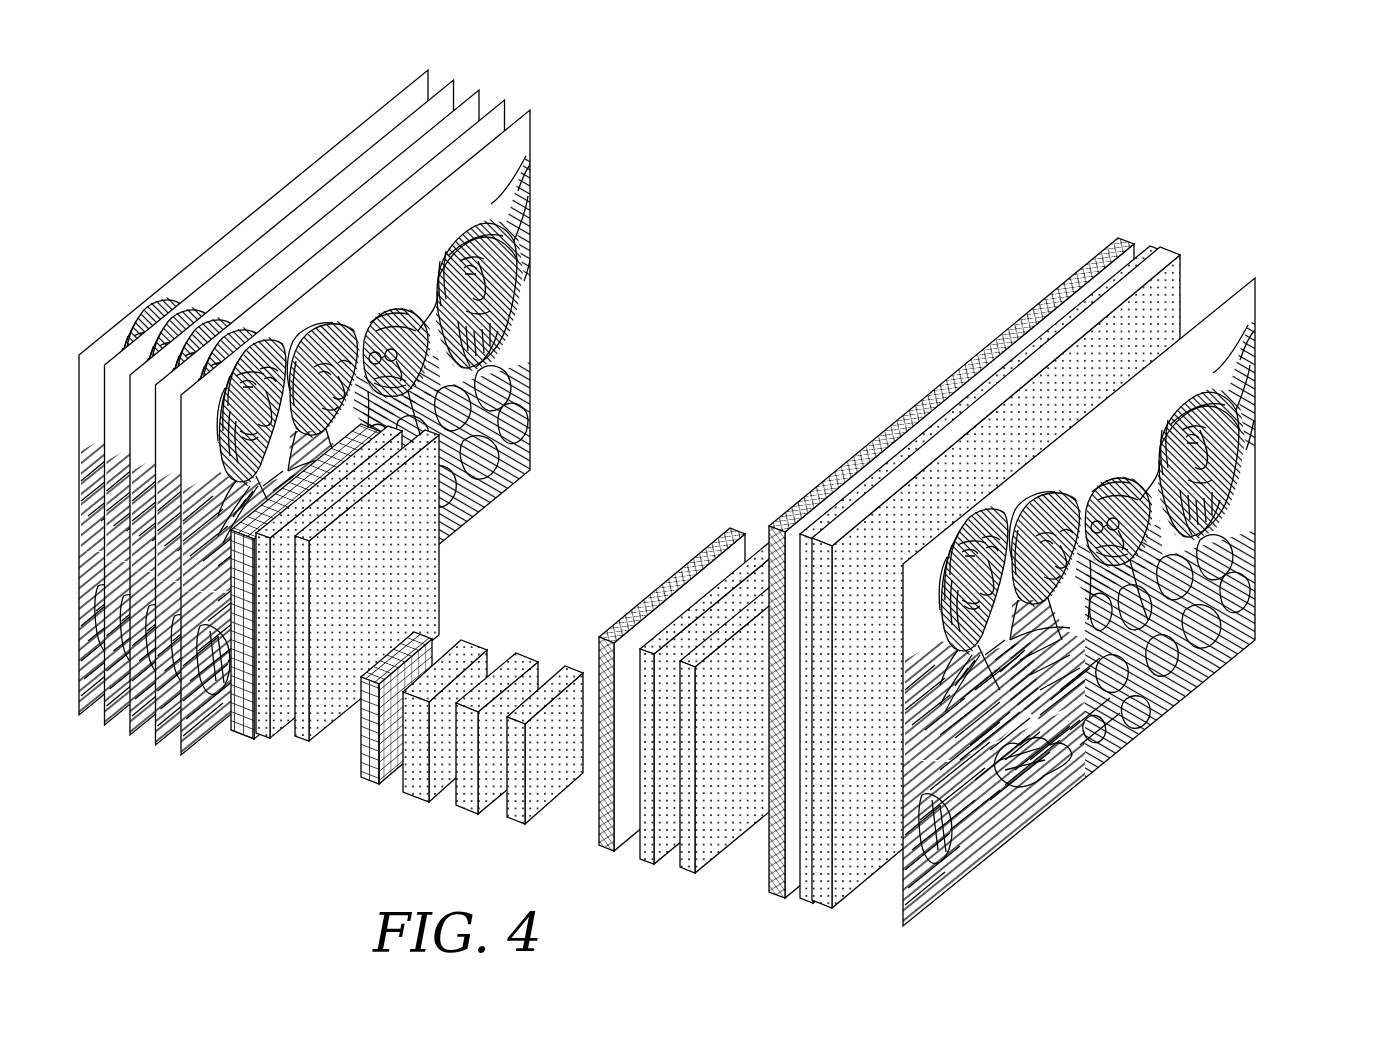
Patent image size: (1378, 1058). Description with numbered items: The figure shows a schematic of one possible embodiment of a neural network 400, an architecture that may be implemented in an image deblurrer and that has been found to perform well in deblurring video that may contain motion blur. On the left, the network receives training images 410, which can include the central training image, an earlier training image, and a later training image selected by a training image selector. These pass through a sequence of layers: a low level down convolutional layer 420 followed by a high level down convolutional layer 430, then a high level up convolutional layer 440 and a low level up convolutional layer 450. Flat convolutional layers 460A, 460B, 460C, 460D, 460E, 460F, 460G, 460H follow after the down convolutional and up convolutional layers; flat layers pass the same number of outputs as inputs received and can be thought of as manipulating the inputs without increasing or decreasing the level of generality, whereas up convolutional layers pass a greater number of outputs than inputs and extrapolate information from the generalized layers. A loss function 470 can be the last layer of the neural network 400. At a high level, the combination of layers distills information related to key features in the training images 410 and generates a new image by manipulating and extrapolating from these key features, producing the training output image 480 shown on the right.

The neural network 400 is at (720, 502).
The training images 410 is at (423, 63).
The low level down convolutional layer 420 is at (233, 732).
The high level down convolutional layer 430 is at (363, 781).
The high level up convolutional layer 440 is at (600, 849).
The low level up convolutional layer 450 is at (781, 893).
The flat convolutional layer 460A is at (262, 739).
The flat convolutional layer 460B is at (302, 740).
The flat convolutional layer 460C is at (478, 645).
The flat convolutional layer 460D is at (522, 661).
The flat convolutional layer 460E is at (578, 670).
The flat convolutional layer 460F is at (764, 549).
The flat convolutional layer 460G is at (681, 871).
The flat convolutional layer 460H is at (804, 902).
The loss function 470 is at (1180, 256).
The training output image 480 is at (1253, 280).